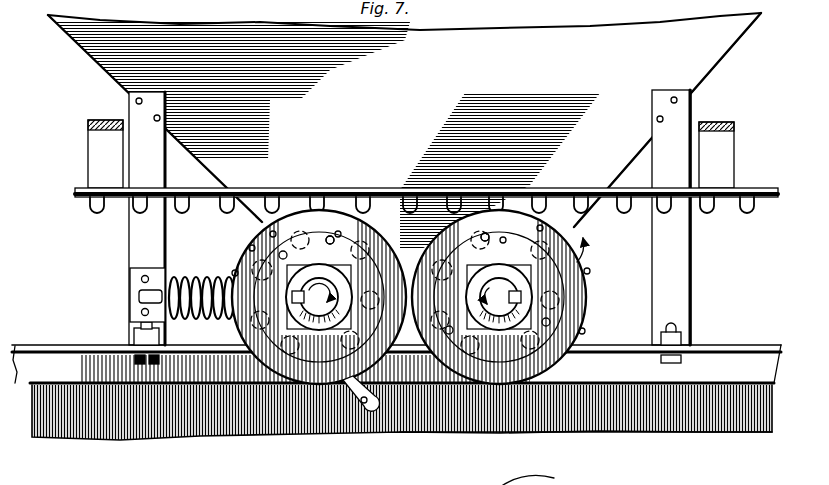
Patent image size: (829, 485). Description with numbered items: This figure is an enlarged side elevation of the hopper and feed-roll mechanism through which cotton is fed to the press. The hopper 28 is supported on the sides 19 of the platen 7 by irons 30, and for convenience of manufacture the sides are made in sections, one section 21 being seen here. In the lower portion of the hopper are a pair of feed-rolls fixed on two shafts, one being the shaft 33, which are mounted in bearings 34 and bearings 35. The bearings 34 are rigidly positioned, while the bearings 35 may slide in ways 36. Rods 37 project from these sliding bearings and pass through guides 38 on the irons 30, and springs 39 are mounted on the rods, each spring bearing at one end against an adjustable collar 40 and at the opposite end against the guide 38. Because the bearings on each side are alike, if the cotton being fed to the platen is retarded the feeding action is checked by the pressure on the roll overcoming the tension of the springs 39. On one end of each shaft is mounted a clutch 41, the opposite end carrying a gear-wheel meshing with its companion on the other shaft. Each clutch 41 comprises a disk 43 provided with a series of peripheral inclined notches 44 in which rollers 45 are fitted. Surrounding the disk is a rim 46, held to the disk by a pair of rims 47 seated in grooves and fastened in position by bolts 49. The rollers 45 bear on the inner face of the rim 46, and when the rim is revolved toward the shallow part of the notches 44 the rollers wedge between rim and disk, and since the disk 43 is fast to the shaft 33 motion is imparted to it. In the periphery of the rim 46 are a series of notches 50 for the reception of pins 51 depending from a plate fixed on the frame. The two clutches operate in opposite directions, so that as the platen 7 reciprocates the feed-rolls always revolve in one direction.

The platen 7 is at (414, 412).
The sides of the platen 19 is at (586, 442).
The section 21 is at (396, 357).
The hopper 28 is at (404, 131).
The irons 30 is at (700, 112).
The shaft 33 is at (319, 297).
The bearings 34 is at (584, 244).
The bearings 35 is at (349, 222).
The ways 36 is at (243, 437).
The rods 37 is at (140, 297).
The guides 38 is at (171, 274).
The springs 39 is at (407, 342).
The adjustable collar 40 is at (262, 290).
The clutch 41 is at (245, 320).
The disk 43 is at (497, 355).
The peripheral inclined notches 44 is at (392, 215).
The rollers 45 is at (250, 245).
The rim 46 is at (234, 272).
The rims 47 is at (337, 232).
The bolts 49 is at (332, 236).
The notches 50 is at (274, 232).
The pins 51 is at (95, 210).